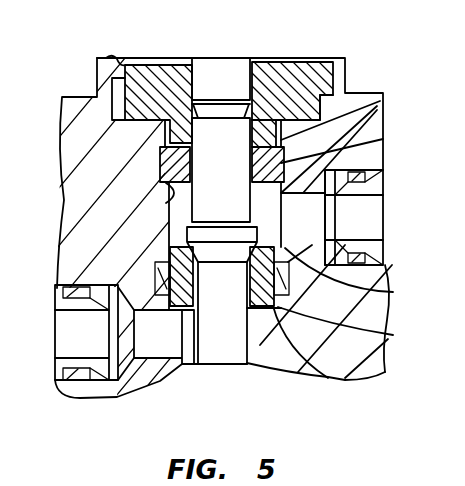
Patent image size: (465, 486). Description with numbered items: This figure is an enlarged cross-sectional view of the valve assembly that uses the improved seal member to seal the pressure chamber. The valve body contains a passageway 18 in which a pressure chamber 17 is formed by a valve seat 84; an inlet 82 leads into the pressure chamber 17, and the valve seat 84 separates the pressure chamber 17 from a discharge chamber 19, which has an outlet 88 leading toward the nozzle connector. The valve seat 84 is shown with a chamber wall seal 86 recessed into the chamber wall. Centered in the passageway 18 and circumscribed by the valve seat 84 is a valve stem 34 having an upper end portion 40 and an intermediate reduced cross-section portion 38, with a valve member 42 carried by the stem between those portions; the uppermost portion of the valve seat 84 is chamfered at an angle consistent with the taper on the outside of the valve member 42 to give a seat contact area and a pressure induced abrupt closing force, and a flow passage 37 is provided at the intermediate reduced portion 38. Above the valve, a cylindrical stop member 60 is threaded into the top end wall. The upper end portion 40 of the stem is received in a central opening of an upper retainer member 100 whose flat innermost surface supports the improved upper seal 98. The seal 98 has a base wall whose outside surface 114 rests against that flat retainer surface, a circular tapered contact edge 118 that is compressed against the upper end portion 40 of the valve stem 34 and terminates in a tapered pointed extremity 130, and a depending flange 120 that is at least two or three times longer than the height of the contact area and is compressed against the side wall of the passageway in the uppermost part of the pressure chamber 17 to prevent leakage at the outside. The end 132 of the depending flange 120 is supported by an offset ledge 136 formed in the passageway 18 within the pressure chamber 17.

The pressure chamber 17 is at (178, 223).
The passageway 18 is at (248, 364).
The discharge chamber 19 is at (187, 358).
The valve stem 34 is at (250, 118).
The flow passage 37 is at (317, 377).
The intermediate reduced cross-section portion 38 is at (207, 337).
The upper end portion 40 is at (207, 165).
The valve member 42 is at (228, 240).
The cylindrical stop member 60 is at (212, 86).
The inlet 82 is at (352, 272).
The valve seat 84 is at (336, 329).
The chamber wall seal 86 is at (393, 335).
The outlet 88 is at (160, 307).
The upper seal 98 is at (157, 148).
The upper retainer member 100 is at (286, 62).
The outside surface 114 is at (179, 62).
The contact edge 118 is at (383, 140).
The depending flange 120 is at (377, 106).
The tapered pointed extremity 130 is at (250, 152).
The end of depending flange 132 is at (282, 193).
The offset ledge 136 is at (172, 200).